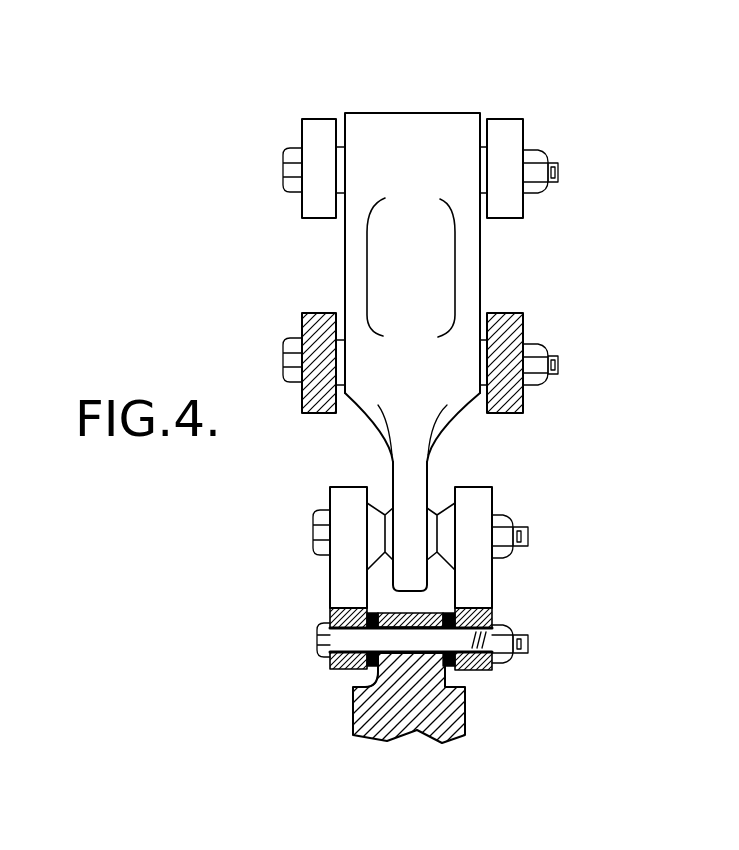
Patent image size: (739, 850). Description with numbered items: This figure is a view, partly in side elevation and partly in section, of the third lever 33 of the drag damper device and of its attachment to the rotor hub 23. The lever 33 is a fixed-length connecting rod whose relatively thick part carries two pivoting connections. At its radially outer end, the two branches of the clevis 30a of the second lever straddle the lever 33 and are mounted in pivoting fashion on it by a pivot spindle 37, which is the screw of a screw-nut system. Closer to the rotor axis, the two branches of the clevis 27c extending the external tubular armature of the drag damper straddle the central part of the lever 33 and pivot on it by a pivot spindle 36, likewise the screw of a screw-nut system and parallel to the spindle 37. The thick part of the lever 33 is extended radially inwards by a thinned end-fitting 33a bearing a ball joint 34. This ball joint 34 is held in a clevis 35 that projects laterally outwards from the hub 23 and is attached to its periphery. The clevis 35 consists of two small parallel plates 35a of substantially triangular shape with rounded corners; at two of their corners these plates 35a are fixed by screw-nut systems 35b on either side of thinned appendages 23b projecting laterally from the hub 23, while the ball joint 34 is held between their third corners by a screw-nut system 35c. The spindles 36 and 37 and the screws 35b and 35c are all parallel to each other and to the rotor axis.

The hub 23 is at (443, 705).
The thinned appendages 23b is at (367, 667).
The clevis of the damper 27c is at (497, 340).
The clevis of the second lever 30a is at (507, 142).
The third lever 33 is at (413, 248).
The thinned end-fitting 33a is at (410, 505).
The ball joint 34 is at (432, 525).
The clevis 35 is at (330, 573).
The small parallel plates 35a is at (343, 603).
The screw-nut systems 35b is at (320, 642).
The screw-nut system 35c is at (317, 527).
The pivot spindle 36 is at (292, 363).
The pivot spindle 37 is at (295, 172).